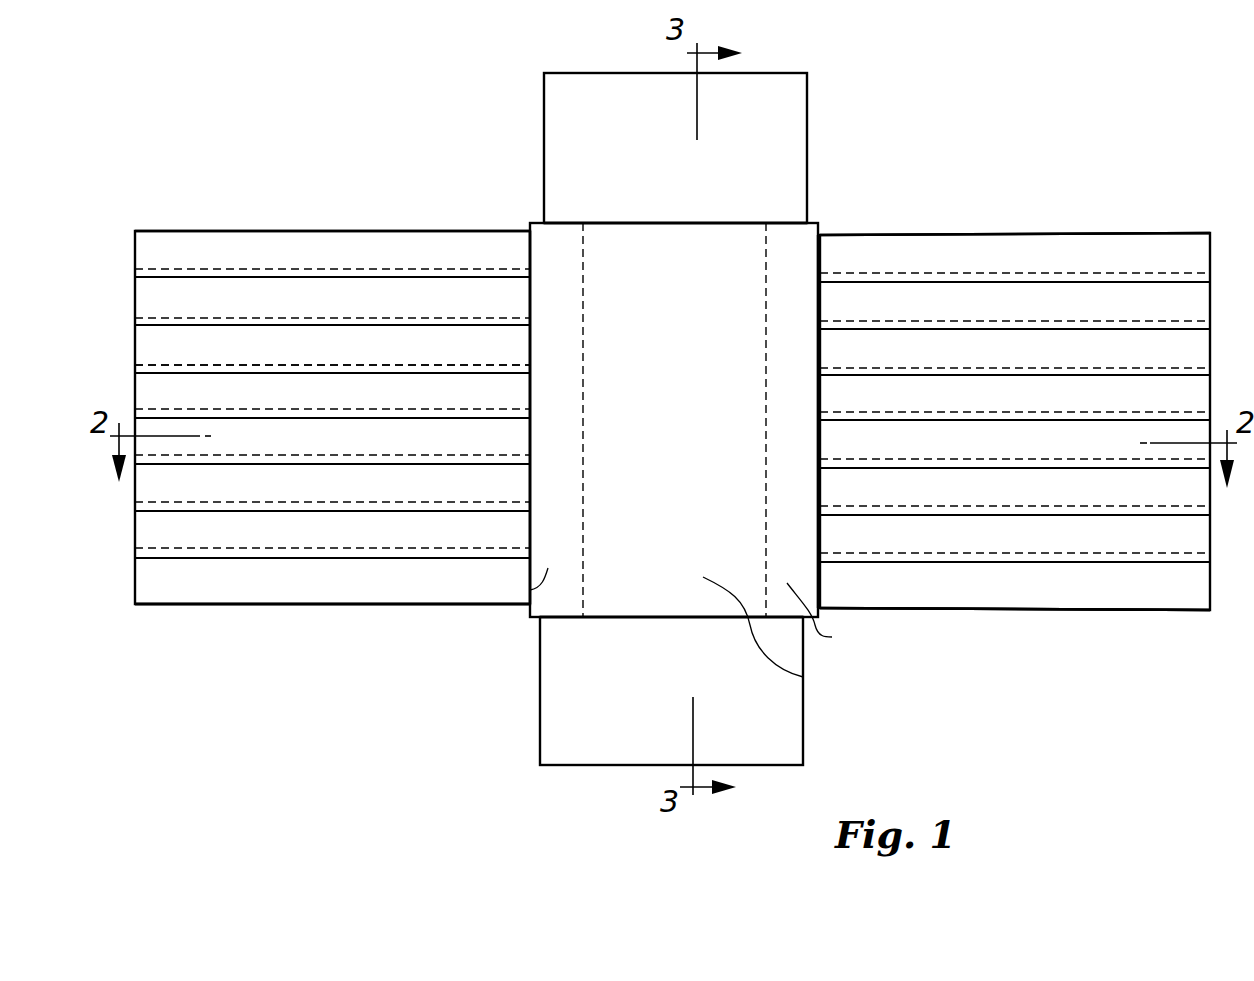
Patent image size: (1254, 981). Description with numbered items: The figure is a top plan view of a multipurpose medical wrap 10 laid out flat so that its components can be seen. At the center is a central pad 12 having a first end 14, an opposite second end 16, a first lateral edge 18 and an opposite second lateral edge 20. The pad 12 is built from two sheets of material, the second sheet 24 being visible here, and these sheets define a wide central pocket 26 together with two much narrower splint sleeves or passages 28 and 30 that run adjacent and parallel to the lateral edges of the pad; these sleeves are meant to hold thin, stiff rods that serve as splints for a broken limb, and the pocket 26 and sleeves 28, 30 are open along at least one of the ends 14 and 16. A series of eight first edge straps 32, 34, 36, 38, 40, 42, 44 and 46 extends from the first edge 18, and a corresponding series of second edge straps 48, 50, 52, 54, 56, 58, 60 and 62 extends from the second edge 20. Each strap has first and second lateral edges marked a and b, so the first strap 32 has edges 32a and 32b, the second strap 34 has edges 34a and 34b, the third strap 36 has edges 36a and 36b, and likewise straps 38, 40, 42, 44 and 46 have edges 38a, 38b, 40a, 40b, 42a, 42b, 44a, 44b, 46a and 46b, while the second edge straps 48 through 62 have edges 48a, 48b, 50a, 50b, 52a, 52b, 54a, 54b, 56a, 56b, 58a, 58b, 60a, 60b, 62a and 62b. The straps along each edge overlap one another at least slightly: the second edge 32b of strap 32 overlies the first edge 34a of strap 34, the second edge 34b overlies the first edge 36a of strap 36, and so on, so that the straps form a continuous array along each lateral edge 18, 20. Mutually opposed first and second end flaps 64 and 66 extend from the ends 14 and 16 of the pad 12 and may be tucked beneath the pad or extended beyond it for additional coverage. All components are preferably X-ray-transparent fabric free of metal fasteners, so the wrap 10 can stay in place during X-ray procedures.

The wrap 10 is at (1037, 741).
The central pad 12 is at (514, 625).
The first end 14 is at (610, 223).
The second end 16 is at (612, 617).
The first lateral edge 18 is at (530, 434).
The second lateral edge 20 is at (820, 440).
The second sheet of material 24 is at (688, 419).
The central pocket 26 is at (803, 677).
The first splint sleeve 28 is at (530, 590).
The second splint sleeve 30 is at (832, 637).
The first strap 32 is at (198, 261).
The first lateral edge of first strap 32a is at (276, 231).
The second lateral edge of first strap 32b is at (338, 278).
The second strap 34 is at (198, 309).
The first edge of second strap 34a is at (456, 269).
The second edge of second strap 34b is at (404, 326).
The third strap 36 is at (198, 356).
The first edge of third strap 36a is at (351, 319).
The second edge of third strap 36b is at (498, 366).
The first edge strap 38 is at (198, 404).
The first edge of strap 38a is at (359, 366).
The second edge of strap 38b is at (368, 419).
The first edge strap 40 is at (265, 447).
The first edge of strap 40a is at (278, 418).
The second edge of strap 40b is at (377, 463).
The first edge strap 42 is at (198, 494).
The first edge of strap 42a is at (312, 460).
The second edge of strap 42b is at (361, 512).
The first edge strap 44 is at (198, 541).
The first edge of strap 44a is at (310, 505).
The second edge of strap 44b is at (338, 559).
The first edge strap 46 is at (198, 587).
The first edge of strap 46a is at (310, 550).
The second edge of strap 46b is at (283, 604).
The second edge strap 48 is at (898, 262).
The first edge of strap 48a is at (1010, 233).
The second edge of strap 48b is at (1019, 282).
The second edge strap 50 is at (898, 309).
The first edge of strap 50a is at (1093, 274).
The second edge of strap 50b is at (1141, 329).
The second edge strap 52 is at (898, 357).
The first edge of strap 52a is at (1178, 320).
The second edge of strap 52b is at (1134, 375).
The second edge strap 54 is at (898, 404).
The first edge of strap 54a is at (1037, 367).
The second edge of strap 54b is at (1045, 422).
The second edge strap 56 is at (953, 447).
The first edge of strap 56a is at (1025, 412).
The second edge of strap 56b is at (1127, 468).
The second edge strap 58 is at (898, 497).
The first edge of strap 58a is at (1060, 460).
The second edge of strap 58b is at (1020, 516).
The second edge strap 60 is at (898, 546).
The first edge of strap 60a is at (1008, 506).
The second edge of strap 60b is at (1014, 562).
The second edge strap 62 is at (898, 597).
The first edge of strap 62a is at (1122, 553).
The second edge of strap 62b is at (1120, 610).
The first end flap 64 is at (630, 131).
The second end flap 66 is at (648, 741).